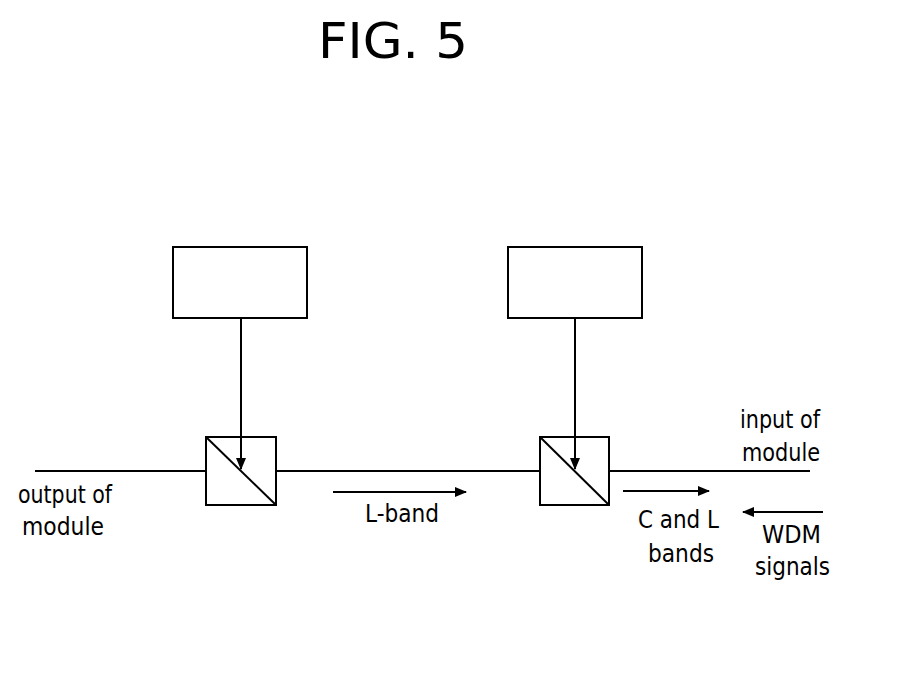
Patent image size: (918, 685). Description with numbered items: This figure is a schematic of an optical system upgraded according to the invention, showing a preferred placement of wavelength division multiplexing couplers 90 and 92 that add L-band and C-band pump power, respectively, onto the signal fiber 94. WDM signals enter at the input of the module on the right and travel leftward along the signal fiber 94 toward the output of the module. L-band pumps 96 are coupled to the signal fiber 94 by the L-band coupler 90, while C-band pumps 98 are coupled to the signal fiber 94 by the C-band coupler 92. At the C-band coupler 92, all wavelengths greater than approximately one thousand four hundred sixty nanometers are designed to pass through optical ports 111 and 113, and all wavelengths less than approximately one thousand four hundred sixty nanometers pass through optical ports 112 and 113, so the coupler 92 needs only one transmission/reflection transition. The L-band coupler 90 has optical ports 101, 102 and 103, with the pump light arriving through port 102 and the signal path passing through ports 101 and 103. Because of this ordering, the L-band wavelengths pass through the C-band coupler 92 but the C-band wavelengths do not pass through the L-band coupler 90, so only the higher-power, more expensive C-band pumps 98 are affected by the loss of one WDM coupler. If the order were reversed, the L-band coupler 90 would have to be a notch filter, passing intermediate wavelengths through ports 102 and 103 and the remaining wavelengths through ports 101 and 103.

The L-band coupler 90 is at (237, 493).
The C-band coupler 92 is at (563, 495).
The signal fiber 94 is at (78, 468).
The L-band pumps 96 is at (300, 262).
The C-band pumps 98 is at (636, 260).
The optical port 101 is at (178, 474).
The optical port 102 is at (241, 370).
The optical port 103 is at (312, 468).
The optical port 111 is at (507, 468).
The optical port 112 is at (576, 372).
The optical port 113 is at (640, 468).